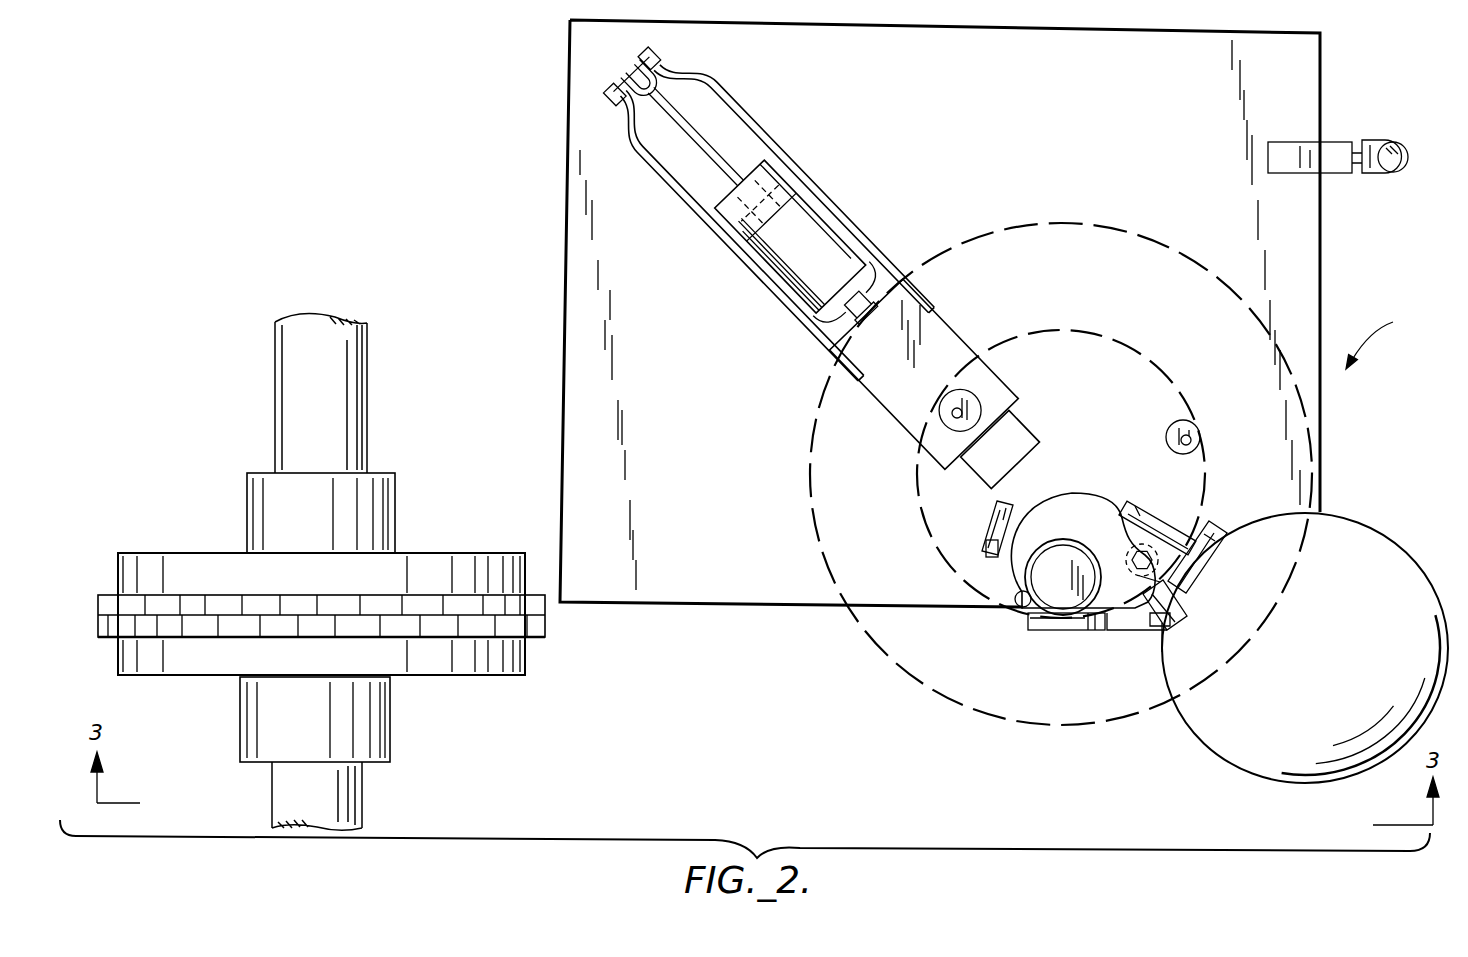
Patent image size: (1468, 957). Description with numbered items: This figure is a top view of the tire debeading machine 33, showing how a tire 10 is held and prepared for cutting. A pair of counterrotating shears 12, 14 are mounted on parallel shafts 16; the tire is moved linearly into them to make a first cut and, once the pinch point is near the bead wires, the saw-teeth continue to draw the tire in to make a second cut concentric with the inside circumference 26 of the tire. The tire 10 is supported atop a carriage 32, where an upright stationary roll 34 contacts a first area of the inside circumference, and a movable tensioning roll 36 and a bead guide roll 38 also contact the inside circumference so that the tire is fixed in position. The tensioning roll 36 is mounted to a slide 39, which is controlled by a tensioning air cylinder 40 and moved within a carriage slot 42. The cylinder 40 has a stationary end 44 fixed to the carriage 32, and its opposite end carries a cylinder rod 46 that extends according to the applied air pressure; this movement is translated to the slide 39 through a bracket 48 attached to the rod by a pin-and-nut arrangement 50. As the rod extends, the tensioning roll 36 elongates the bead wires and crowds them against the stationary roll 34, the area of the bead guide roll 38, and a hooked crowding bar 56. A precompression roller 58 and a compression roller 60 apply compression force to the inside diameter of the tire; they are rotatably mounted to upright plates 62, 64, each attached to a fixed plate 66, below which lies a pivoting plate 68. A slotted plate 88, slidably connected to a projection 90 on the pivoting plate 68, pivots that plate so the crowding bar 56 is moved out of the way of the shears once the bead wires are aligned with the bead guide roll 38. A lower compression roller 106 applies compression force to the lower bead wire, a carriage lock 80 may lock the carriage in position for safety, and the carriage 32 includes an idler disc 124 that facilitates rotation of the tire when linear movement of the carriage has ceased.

The tire 10 is at (835, 545).
The shear 12 is at (428, 568).
The shear 14 is at (470, 668).
The parallel shafts 16 is at (360, 415).
The inside circumference 26 is at (1163, 357).
The carriage 32 is at (598, 345).
The debeading machine 33 is at (1388, 340).
The upright stationary roll 34 is at (1200, 447).
The movable tensioning roll 36 is at (940, 402).
The bead guide roll 38 is at (1055, 555).
The slide 39 is at (953, 333).
The tensioning air cylinder 40 is at (778, 283).
The carriage slot 42 is at (1020, 440).
The stationary end 44 is at (830, 330).
The cylinder rod 46 is at (685, 128).
The bracket 48 is at (787, 157).
The pin-and-nut arrangement 50 is at (610, 117).
The hooked crowding bar 56 is at (1018, 605).
The precompression roller 58 is at (1205, 560).
The compression roller 60 is at (1160, 655).
The upright plate 62 is at (1162, 512).
The upright plate 64 is at (1155, 628).
The fixed plate 66 is at (1150, 528).
The pivoting plate 68 is at (1060, 493).
The carriage lock 80 is at (1395, 140).
The slotted plate 88 is at (992, 520).
The projection 90 is at (985, 548).
The lower compression roller 106 is at (1088, 632).
The idler disc 124 is at (1250, 753).